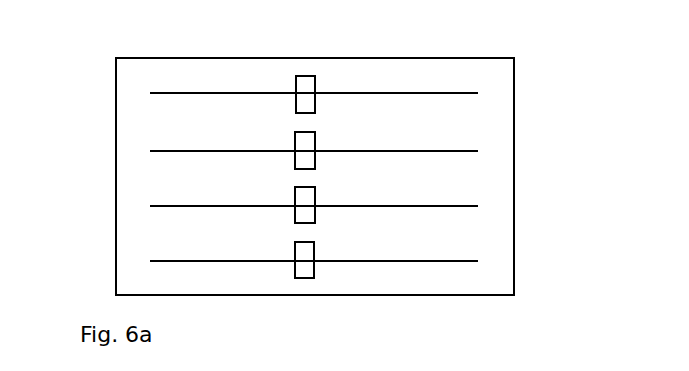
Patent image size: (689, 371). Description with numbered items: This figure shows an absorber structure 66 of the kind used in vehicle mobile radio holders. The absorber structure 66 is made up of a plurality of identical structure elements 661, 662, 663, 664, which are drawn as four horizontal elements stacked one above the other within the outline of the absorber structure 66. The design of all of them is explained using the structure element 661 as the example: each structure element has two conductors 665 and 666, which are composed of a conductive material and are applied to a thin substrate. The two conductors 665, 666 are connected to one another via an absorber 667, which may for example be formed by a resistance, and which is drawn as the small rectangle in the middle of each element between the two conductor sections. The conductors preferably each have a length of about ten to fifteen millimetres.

The absorber structure 66 is at (502, 156).
The structure element 661 is at (136, 96).
The structure element 662 is at (136, 152).
The structure element 663 is at (136, 208).
The structure element 664 is at (136, 263).
The conductor 665 is at (243, 86).
The conductor 666 is at (406, 86).
The absorber 667 is at (311, 76).